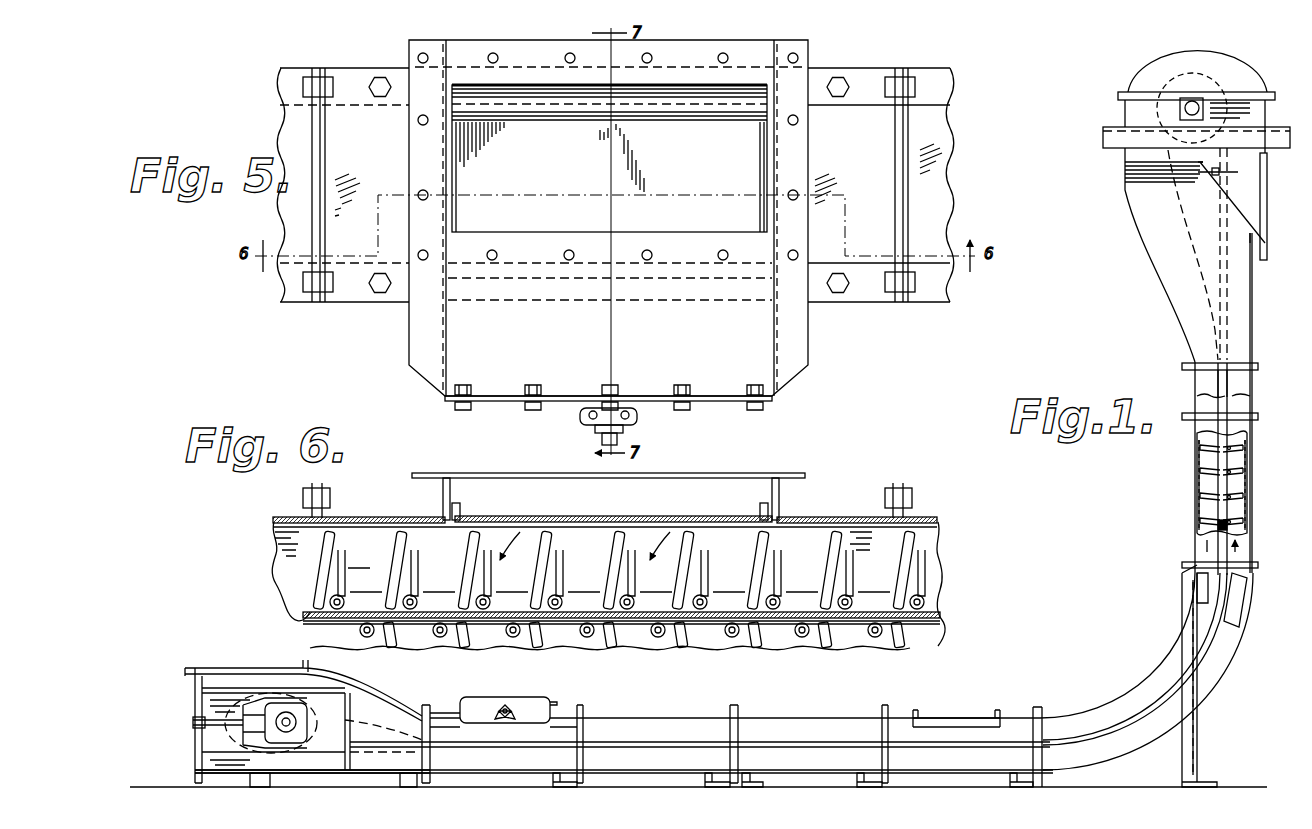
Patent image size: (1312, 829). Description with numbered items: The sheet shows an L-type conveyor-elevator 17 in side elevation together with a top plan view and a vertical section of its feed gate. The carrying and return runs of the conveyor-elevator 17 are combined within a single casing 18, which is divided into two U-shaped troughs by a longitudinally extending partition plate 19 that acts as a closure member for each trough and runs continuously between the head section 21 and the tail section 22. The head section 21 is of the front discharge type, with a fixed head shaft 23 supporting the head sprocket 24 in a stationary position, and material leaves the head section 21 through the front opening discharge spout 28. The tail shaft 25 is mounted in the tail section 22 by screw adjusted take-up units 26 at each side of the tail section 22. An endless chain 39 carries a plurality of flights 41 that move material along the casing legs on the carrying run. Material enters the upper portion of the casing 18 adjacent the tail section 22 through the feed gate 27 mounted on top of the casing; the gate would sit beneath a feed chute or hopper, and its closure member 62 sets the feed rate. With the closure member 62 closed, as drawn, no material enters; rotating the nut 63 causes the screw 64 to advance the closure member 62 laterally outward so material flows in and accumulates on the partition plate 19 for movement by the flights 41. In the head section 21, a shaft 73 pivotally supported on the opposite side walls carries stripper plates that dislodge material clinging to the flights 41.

In FIG. 1, the L-type conveyor-elevator 17 is at (1137, 686).
In FIG. 5, the casing 18 is at (940, 158).
In FIG. 6, the casing 18 is at (830, 519).
In FIG. 1, the casing 18 is at (785, 727).
In FIG. 6, the partition plate 19 is at (940, 619).
In FIG. 1, the partition plate 19 is at (638, 742).
In FIG. 1, the head section 21 is at (1178, 276).
In FIG. 1, the tail section 22 is at (345, 691).
In FIG. 1, the head shaft 23 is at (1192, 101).
In FIG. 1, the head sprocket 24 is at (1173, 158).
In FIG. 1, the tail shaft 25 is at (296, 723).
In FIG. 1, the take-up units 26 is at (238, 727).
In FIG. 5, the feed gate 27 is at (812, 338).
In FIG. 6, the feed gate 27 is at (792, 474).
In FIG. 1, the feed gate 27 is at (524, 695).
In FIG. 1, the discharge spout 28 is at (1268, 200).
In FIG. 6, the endless traction member 39 is at (430, 597).
In FIG. 1, the endless traction member 39 is at (1247, 487).
In FIG. 6, the flights 41 is at (395, 540).
In FIG. 1, the flights 41 is at (1198, 500).
In FIG. 5, the closure member 62 is at (678, 160).
In FIG. 6, the closure member 62 is at (650, 518).
In FIG. 5, the nut 63 is at (637, 418).
In FIG. 5, the screw 64 is at (600, 442).
In FIG. 1, the shaft 73 is at (1220, 173).